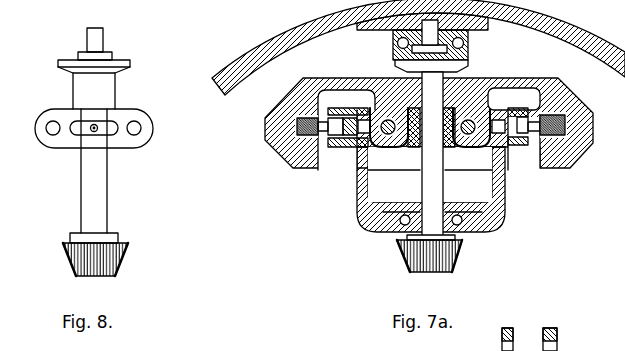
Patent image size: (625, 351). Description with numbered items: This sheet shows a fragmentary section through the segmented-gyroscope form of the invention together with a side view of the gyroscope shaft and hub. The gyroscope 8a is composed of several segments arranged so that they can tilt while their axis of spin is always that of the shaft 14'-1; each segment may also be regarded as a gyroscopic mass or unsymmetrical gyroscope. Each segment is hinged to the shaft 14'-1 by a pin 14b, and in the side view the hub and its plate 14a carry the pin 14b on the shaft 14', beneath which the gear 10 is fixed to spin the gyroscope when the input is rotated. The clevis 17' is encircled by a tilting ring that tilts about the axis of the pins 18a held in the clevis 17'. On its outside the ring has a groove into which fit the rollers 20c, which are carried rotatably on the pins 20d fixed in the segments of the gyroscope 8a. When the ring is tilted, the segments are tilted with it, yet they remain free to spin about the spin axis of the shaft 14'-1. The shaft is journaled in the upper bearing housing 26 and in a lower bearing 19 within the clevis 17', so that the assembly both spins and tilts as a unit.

In FIG. 7A, the gyroscope 8a is at (569, 97).
In FIG. 7A, the bearing housing 26 is at (470, 45).
In FIG. 8, the shaft 14'-1 is at (81, 65).
In FIG. 7A, the shaft 14'-1 is at (456, 101).
In FIG. 8, the brush shaft 14' is at (75, 153).
In FIG. 7A, the brush shaft 14' is at (450, 155).
In FIG. 8, the mounting plate 14a is at (125, 117).
In FIG. 8, the pin 14b is at (141, 129).
In FIG. 7A, the pin 14b is at (373, 150).
In FIG. 7A, the pins 18a is at (471, 139).
In FIG. 7A, the rollers 20c is at (537, 141).
In FIG. 7A, the pins 20d is at (514, 102).
In FIG. 7A, the clevis 17' is at (429, 155).
In FIG. 7A, the lower bearing 19 is at (470, 231).
In FIG. 8, the gear 10 is at (120, 263).
In FIG. 7A, the gear 10 is at (455, 258).